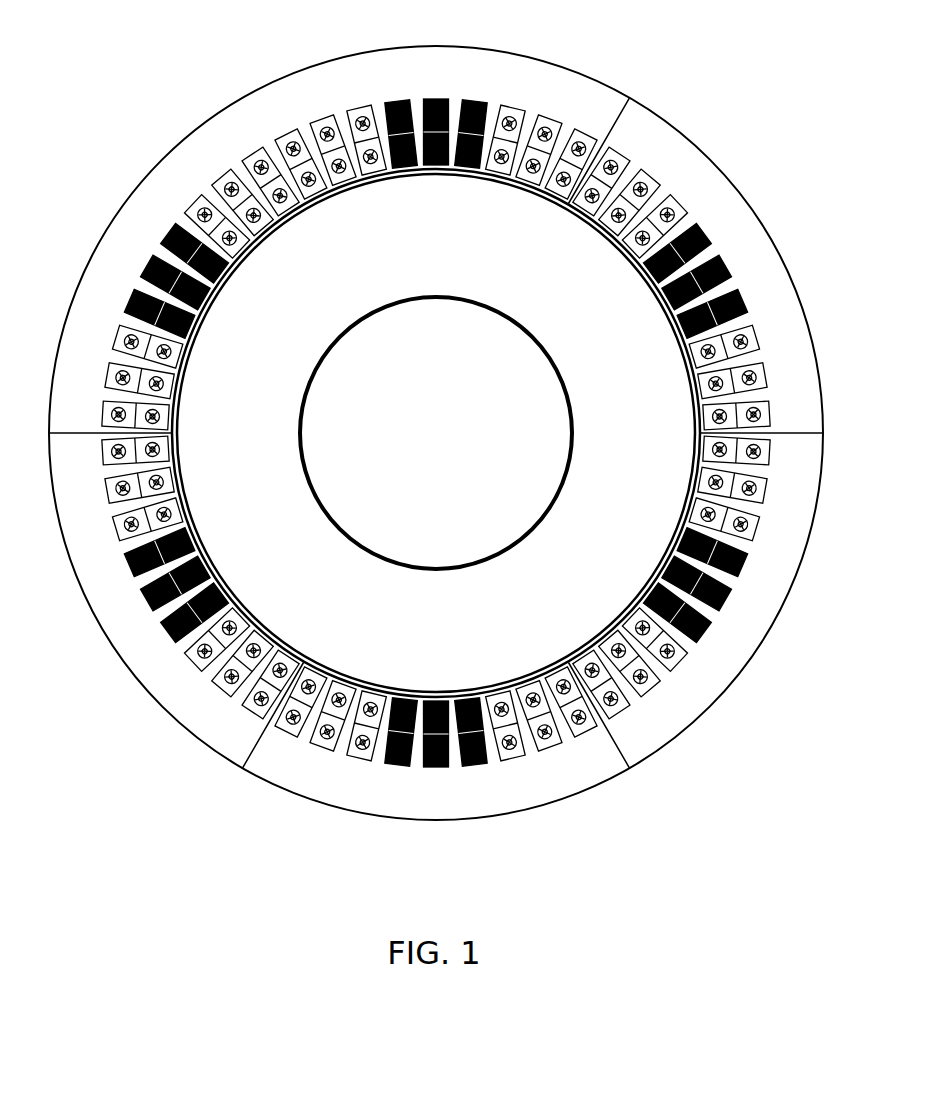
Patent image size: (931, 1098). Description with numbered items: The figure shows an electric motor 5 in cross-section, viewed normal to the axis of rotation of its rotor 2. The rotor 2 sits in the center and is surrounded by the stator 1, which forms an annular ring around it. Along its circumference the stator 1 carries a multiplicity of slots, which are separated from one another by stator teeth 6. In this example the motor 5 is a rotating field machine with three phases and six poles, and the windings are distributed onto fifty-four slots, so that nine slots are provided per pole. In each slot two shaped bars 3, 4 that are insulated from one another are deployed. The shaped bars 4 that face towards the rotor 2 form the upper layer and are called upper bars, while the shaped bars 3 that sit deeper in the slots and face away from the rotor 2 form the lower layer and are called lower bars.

The stator 1 is at (83, 422).
The rotor 2 is at (427, 632).
The shaped bar (lower bar) 3 is at (197, 203).
The shaped bar (upper bar) 4 is at (288, 212).
The electric motor 5 is at (194, 788).
The stator tooth 6 is at (343, 118).